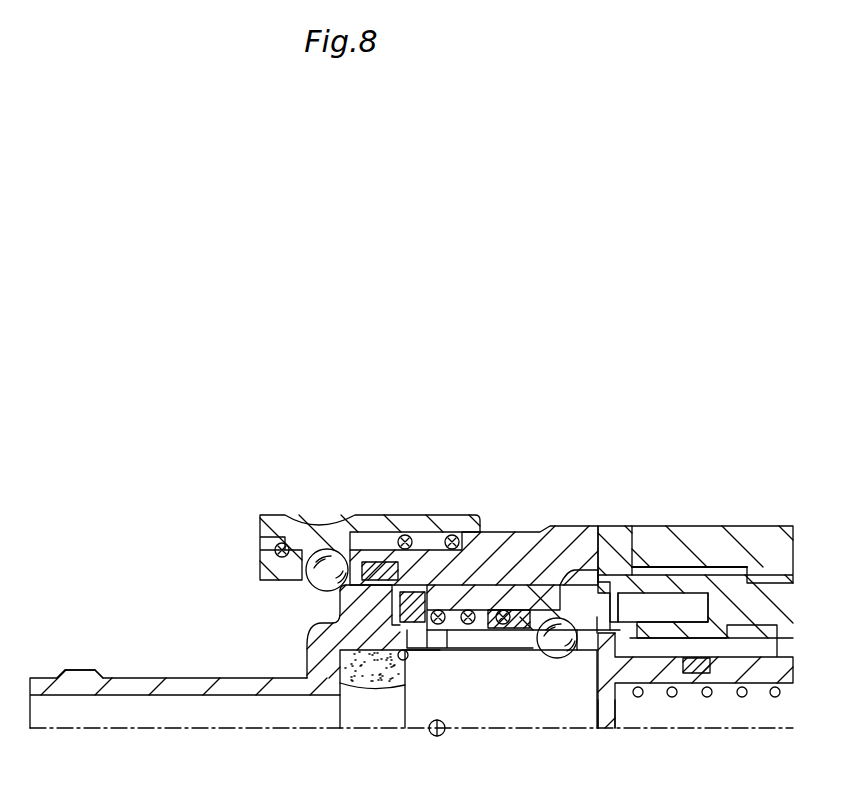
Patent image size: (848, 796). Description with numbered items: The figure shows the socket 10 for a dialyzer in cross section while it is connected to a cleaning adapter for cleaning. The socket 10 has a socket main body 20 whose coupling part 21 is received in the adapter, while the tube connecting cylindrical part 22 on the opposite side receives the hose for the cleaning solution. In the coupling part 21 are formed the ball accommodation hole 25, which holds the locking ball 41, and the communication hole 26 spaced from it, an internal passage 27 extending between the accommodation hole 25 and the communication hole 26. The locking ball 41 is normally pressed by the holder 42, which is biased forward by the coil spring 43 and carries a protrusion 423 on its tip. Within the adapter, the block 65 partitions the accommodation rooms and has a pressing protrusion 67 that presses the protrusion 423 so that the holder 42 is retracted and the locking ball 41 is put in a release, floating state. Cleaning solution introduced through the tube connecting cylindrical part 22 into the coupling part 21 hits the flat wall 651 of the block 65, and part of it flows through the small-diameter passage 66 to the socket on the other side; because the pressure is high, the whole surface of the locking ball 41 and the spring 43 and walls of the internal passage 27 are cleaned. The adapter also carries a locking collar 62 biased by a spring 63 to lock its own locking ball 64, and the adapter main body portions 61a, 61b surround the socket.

The socket 10 is at (250, 676).
The socket main body 20 is at (306, 645).
The coupling part 21 is at (470, 714).
The tube connecting cylindrical part 22 is at (160, 678).
The ball accommodation hole 25 is at (533, 634).
The communication hole 26 is at (437, 642).
The internal passage 27 is at (497, 600).
The locking ball 41 is at (555, 658).
The holder 42 is at (537, 560).
The protrusion 423 is at (590, 642).
The coil spring 43 is at (466, 626).
The housing portion 61a is at (620, 533).
The housing portion 61b is at (763, 533).
The locking collar 62 is at (420, 520).
The spring 63 is at (452, 536).
The locking ball 64 is at (329, 558).
The block 65 is at (620, 703).
The flat wall 651 is at (587, 720).
The small-diameter passage 66 is at (720, 607).
The pressing protrusion 67 is at (617, 603).